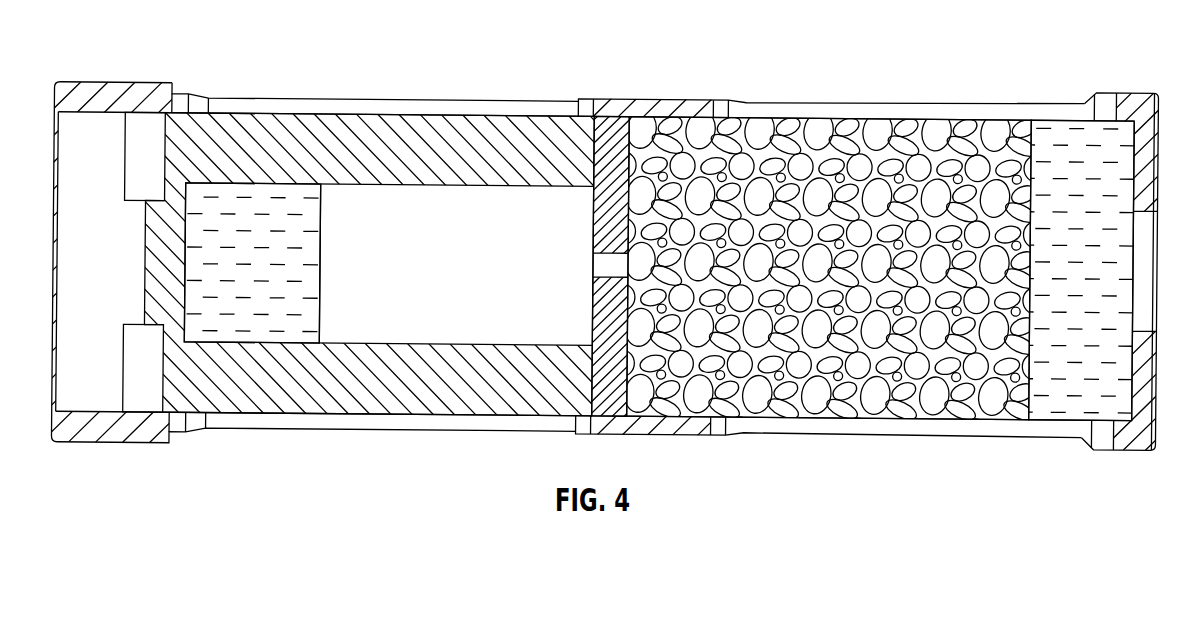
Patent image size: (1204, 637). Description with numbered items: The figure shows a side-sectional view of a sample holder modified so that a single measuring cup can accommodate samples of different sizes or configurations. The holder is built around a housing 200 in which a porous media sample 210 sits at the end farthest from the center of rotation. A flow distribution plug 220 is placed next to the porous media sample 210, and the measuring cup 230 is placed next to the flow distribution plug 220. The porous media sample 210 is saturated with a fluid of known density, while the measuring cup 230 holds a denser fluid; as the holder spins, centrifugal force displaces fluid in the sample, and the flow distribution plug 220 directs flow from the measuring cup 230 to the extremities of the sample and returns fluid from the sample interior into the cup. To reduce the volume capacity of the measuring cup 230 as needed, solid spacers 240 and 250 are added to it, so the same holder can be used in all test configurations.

The housing 200 is at (700, 97).
The porous media sample 210 is at (865, 165).
The flow distribution plug 220 is at (606, 137).
The measuring cup 230 is at (355, 123).
The solid spacer 240 is at (1063, 145).
The solid spacer 250 is at (228, 197).